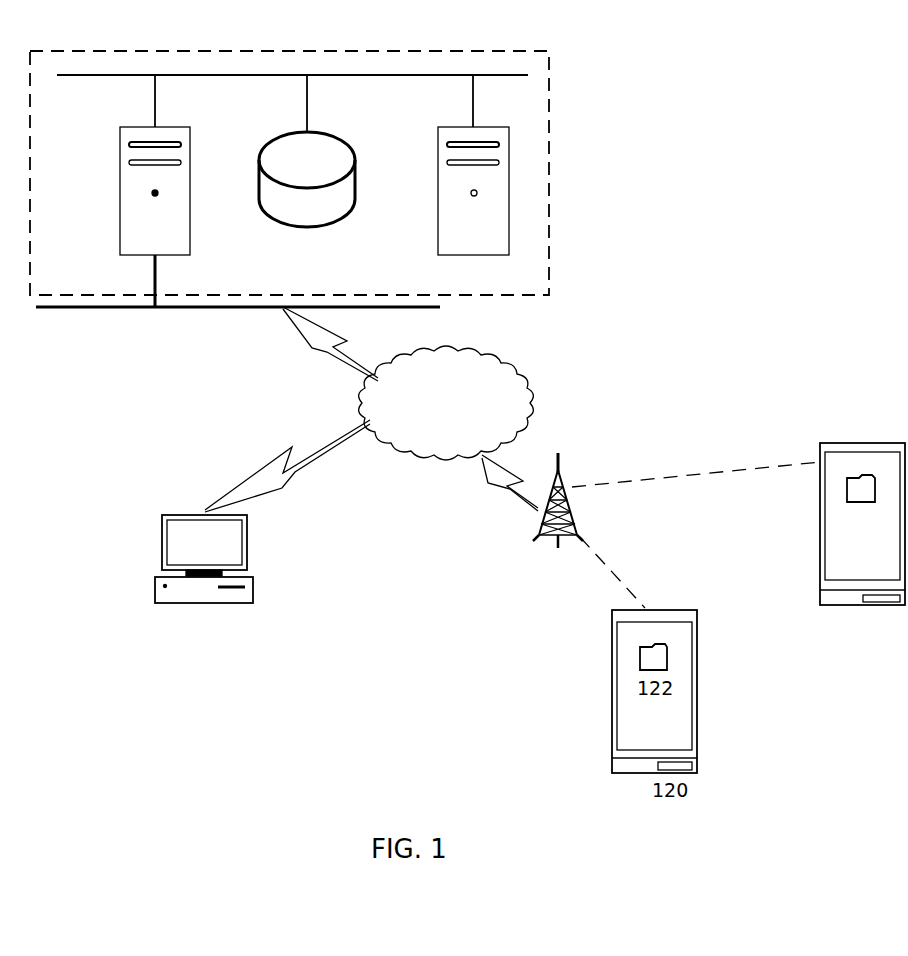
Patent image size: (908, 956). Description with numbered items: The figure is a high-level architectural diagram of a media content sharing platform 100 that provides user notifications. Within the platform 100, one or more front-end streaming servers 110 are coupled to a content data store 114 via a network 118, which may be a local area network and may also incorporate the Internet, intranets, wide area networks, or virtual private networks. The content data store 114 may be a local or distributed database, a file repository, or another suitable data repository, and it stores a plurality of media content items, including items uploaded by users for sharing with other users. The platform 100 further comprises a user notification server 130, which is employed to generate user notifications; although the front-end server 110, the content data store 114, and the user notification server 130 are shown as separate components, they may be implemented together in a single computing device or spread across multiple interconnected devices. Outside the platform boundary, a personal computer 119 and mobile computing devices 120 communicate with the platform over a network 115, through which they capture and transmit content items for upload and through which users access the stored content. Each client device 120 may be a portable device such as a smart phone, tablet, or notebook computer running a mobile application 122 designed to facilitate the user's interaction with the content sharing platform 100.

The media content sharing platform 100 is at (291, 157).
The front-end streaming server 110 is at (238, 204).
The content data store 114 is at (313, 193).
The network 115 is at (371, 409).
The network 118 is at (288, 103).
The personal computer 119 is at (204, 573).
The mobile computing device 120 is at (862, 538).
The mobile application 122 is at (863, 504).
The user notification server 130 is at (478, 178).